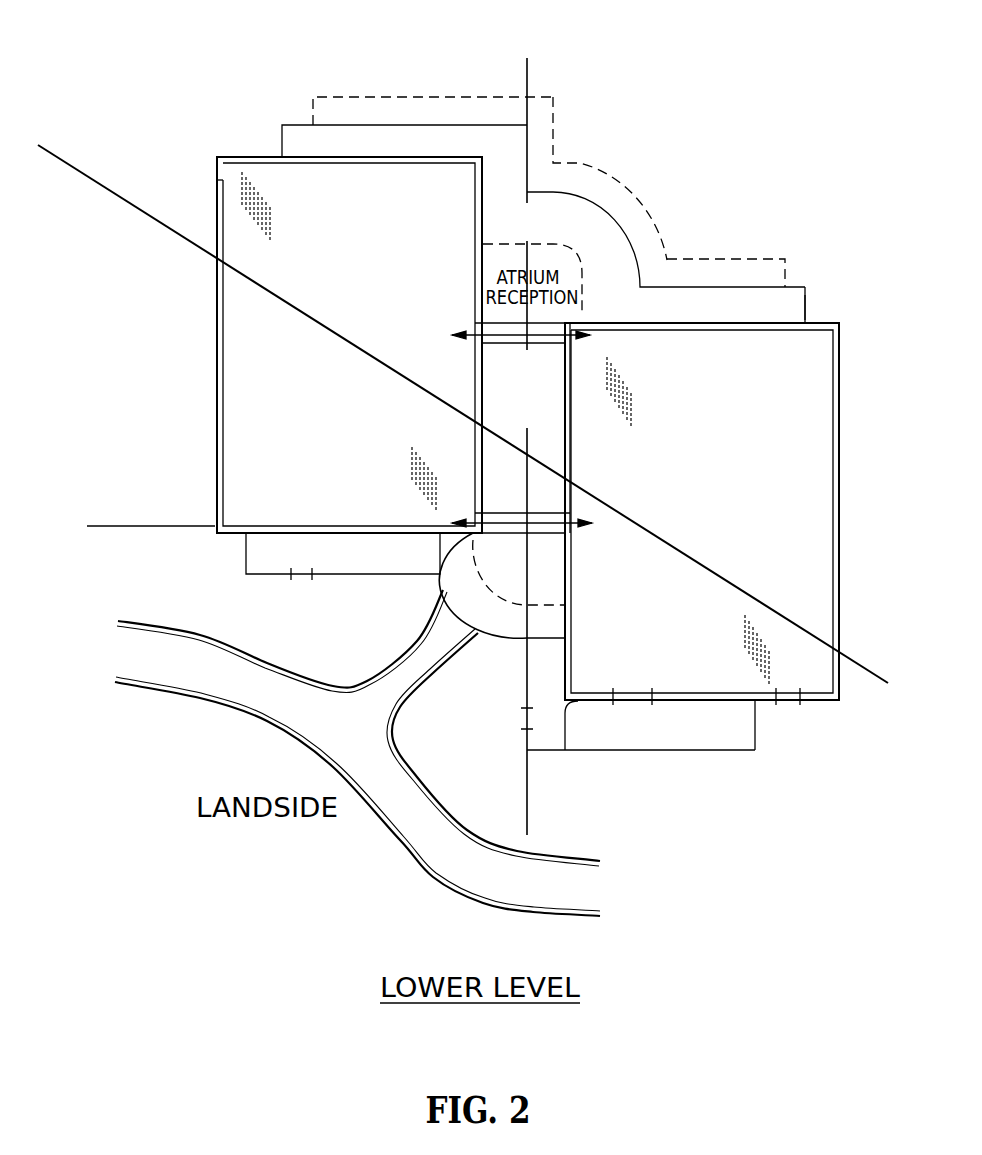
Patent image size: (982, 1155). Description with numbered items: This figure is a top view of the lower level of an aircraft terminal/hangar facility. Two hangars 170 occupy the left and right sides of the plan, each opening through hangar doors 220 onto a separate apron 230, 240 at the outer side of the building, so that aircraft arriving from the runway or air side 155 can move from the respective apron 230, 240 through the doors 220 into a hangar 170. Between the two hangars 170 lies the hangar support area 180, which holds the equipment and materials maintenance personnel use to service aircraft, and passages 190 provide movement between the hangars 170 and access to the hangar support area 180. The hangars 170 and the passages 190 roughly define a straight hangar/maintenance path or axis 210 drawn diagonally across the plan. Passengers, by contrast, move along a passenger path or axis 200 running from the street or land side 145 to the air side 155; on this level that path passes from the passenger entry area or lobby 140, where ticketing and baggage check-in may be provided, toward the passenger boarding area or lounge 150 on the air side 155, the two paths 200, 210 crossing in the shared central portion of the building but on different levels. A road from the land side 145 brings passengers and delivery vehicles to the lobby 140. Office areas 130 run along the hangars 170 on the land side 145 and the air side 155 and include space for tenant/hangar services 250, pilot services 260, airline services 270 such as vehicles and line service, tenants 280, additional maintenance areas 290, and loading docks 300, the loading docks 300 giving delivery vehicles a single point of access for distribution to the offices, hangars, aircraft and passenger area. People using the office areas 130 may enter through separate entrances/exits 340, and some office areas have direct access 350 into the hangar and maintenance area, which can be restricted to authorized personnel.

The office areas 130 is at (808, 308).
The passenger entry area or lobby 140 is at (497, 642).
The street or land side 145 is at (305, 728).
The passenger boarding area or lounge 150 is at (593, 173).
The runway or air side 155 is at (668, 104).
The hangar 170 is at (217, 257).
The hangar support area 180 is at (558, 360).
The passage 190 is at (557, 332).
The passenger path or axis 200 is at (527, 72).
The hangar/maintenance path or axis 210 is at (77, 162).
The hangar doors or portals 220 is at (213, 435).
The apron 230 is at (97, 369).
The apron 240 is at (855, 560).
The tenant/hangar services 250 is at (262, 568).
The pilot services 260 is at (292, 130).
The airline services 270 is at (763, 297).
The tenants 280 is at (540, 673).
The additional maintenance areas 290 is at (670, 750).
The loading docks 300 is at (824, 743).
The separate entrances/exits 340 is at (303, 578).
The direct access 350 is at (565, 716).